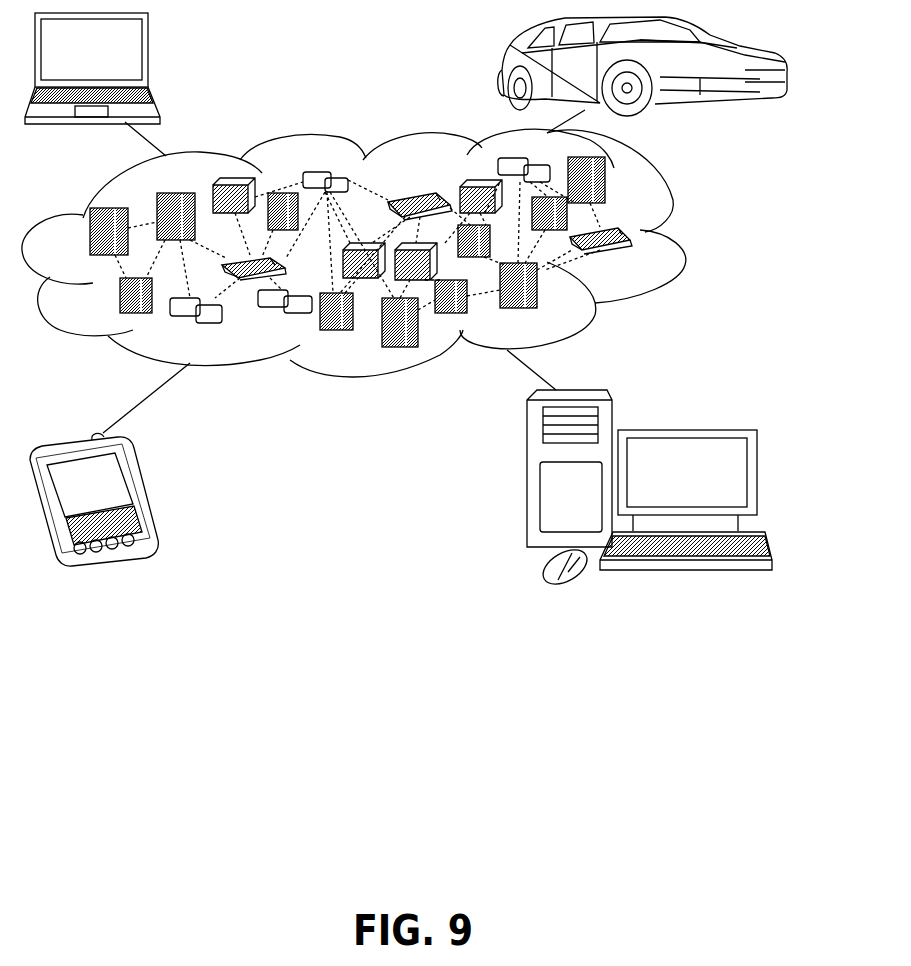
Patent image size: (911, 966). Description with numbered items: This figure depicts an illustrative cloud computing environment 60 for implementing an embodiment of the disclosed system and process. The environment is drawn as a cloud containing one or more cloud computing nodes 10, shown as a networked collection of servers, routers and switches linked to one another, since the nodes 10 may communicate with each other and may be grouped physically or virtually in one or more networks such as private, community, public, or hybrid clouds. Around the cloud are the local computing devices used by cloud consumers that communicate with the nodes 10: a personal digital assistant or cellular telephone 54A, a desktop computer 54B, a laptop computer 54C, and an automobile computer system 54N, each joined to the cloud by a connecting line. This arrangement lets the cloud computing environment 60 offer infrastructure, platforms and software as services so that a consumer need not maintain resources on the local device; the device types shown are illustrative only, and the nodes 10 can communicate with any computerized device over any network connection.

The cloud computing nodes 10 is at (660, 270).
The cloud computing environment 60 is at (683, 241).
The cellular telephone 54A is at (140, 493).
The desktop computer 54B is at (703, 428).
The laptop computer 54C is at (148, 52).
The automobile computer system 54N is at (502, 64).